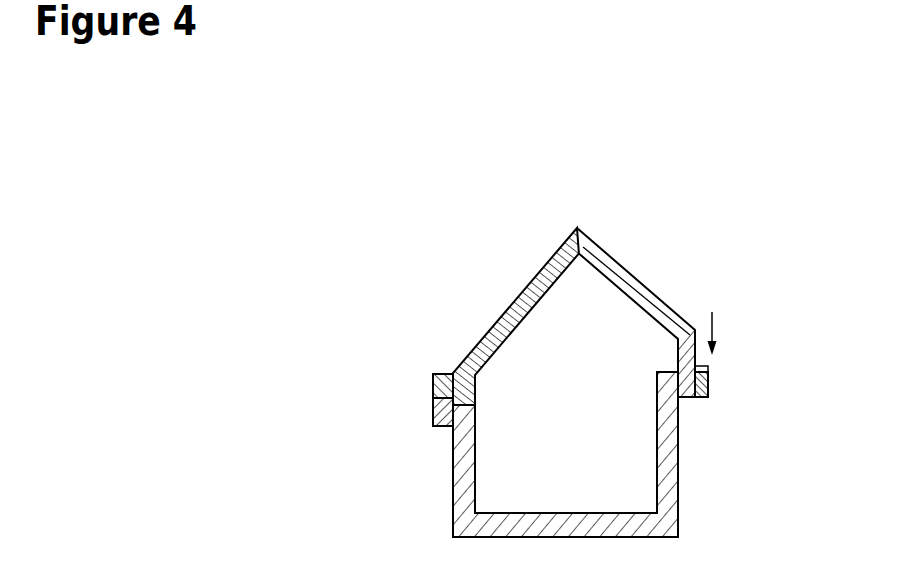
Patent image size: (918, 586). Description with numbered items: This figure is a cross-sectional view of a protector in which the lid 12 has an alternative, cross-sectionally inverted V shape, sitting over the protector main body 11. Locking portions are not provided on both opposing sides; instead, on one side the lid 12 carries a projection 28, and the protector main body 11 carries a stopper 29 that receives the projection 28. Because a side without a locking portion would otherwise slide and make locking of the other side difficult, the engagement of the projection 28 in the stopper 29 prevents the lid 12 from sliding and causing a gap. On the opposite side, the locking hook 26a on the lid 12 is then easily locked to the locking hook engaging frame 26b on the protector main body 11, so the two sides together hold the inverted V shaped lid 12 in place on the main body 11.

The protector main body 11 is at (453, 478).
The lid 12 is at (502, 313).
The projection 28 is at (433, 382).
The stopper 29 is at (433, 415).
The locking hook 26a is at (700, 366).
The locking hook engaging frame 26b is at (708, 390).